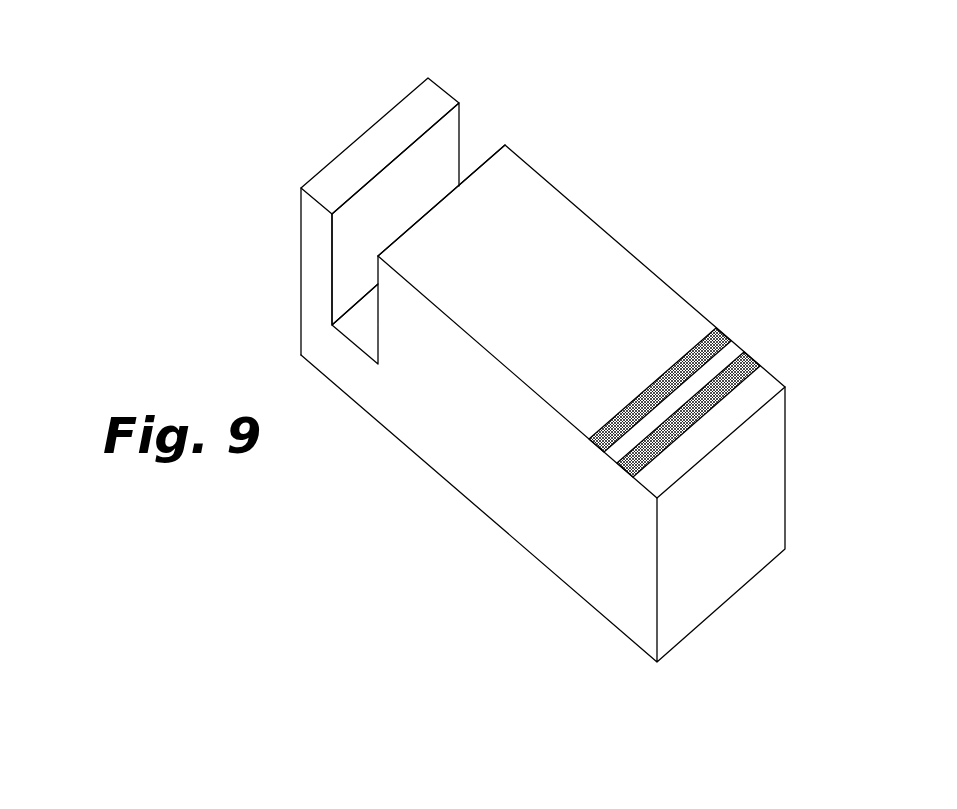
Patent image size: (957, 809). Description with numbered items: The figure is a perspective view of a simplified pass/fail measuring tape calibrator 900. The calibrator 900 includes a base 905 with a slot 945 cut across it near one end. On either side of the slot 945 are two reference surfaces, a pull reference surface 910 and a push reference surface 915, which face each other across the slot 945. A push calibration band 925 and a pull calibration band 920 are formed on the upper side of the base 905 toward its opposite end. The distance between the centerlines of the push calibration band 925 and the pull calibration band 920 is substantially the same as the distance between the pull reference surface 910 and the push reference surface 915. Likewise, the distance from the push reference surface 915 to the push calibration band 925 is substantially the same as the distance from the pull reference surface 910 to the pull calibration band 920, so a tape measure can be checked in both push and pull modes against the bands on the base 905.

The measuring tape calibrator 900 is at (463, 340).
The base 905 is at (470, 447).
The pull reference surface 910 is at (488, 155).
The push reference surface 915 is at (338, 237).
The pull calibration band 920 is at (737, 357).
The push calibration band 925 is at (692, 346).
The slot 945 is at (405, 190).